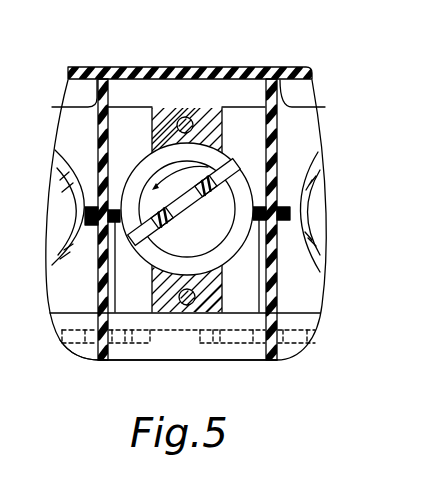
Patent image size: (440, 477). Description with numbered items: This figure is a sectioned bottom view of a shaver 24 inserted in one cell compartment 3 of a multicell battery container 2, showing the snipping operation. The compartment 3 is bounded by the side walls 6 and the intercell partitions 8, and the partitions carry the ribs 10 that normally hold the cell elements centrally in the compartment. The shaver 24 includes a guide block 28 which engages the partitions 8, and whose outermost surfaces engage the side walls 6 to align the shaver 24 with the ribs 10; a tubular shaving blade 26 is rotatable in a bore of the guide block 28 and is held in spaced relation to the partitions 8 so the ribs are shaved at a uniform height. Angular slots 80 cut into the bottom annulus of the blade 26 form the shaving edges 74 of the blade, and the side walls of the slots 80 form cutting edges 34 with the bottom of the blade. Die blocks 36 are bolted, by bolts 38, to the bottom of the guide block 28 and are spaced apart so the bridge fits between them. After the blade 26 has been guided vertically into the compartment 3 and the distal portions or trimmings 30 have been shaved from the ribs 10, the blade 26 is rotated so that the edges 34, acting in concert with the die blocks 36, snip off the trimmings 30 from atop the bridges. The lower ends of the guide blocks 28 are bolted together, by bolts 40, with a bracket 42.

The multicell battery container 2 is at (243, 67).
The cell compartment 3 is at (313, 80).
The side wall 6 is at (141, 70).
The intercell partition 8 is at (100, 293).
The rib 10 is at (99, 253).
The shaver 24 is at (146, 100).
The tubular shaving blade 26 is at (227, 148).
The guide block 28 is at (118, 131).
The trimmings 30 is at (153, 212).
The cutting edge 34 is at (148, 196).
The die block 36 is at (173, 127).
The bolt 38 is at (196, 130).
The bolt 40 is at (207, 337).
The bracket 42 is at (253, 350).
The shaving edge 74 is at (117, 318).
The angular slot 80 is at (75, 201).